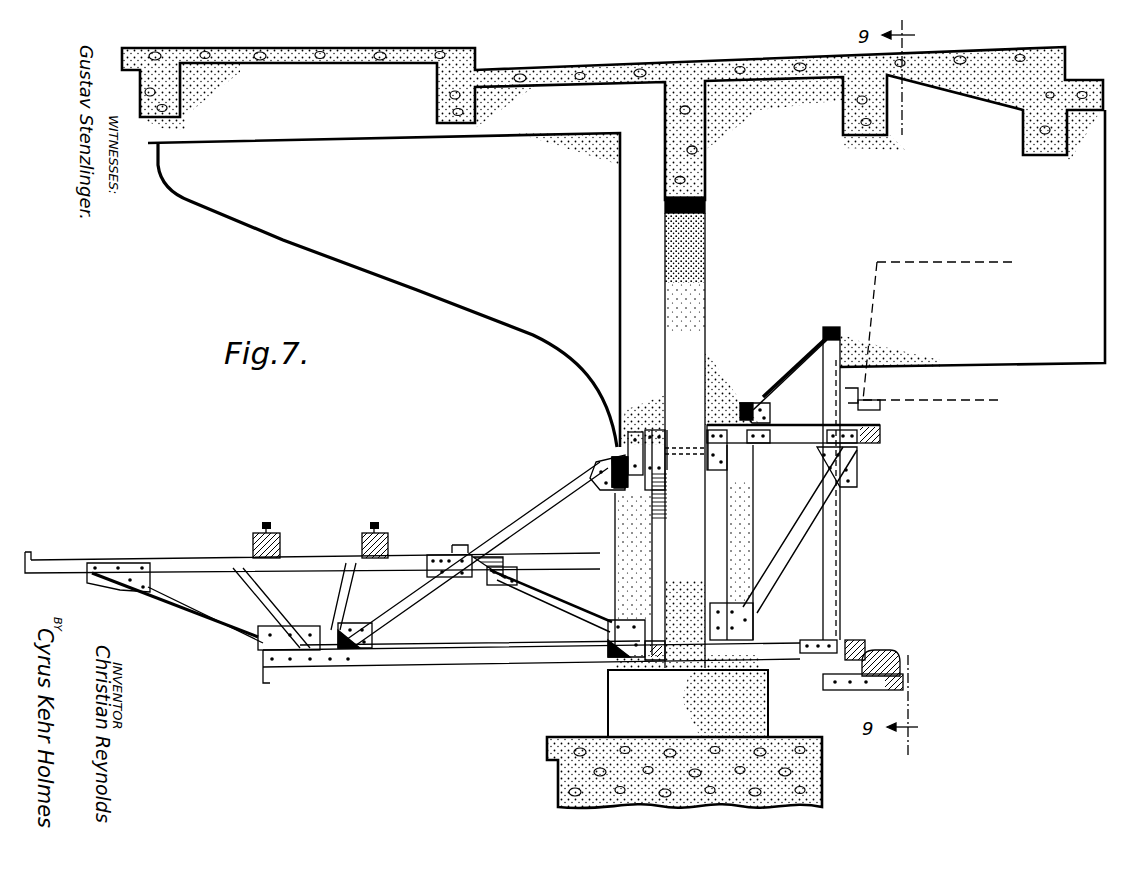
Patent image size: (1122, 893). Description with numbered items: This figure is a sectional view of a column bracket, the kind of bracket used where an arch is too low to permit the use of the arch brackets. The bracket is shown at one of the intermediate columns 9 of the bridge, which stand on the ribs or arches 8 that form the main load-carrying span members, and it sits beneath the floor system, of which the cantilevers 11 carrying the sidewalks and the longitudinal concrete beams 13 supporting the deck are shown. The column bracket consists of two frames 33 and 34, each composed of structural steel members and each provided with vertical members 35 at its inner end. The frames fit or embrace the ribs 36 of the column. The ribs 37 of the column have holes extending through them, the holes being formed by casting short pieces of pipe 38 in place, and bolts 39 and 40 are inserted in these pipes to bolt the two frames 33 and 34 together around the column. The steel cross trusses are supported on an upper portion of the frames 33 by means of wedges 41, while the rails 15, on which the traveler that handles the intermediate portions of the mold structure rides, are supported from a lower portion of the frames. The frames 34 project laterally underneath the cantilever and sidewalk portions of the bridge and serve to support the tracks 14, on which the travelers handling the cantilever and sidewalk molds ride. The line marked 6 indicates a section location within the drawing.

The gate outline 6 is at (957, 386).
The ribs or arches 8 is at (812, 775).
The intermediate columns 9 is at (748, 702).
The cantilevers 11 is at (626, 278).
The longitudinal concrete beams 13 is at (705, 172).
The tracks 14 is at (372, 523).
The rails 15 is at (878, 655).
The frame 33 is at (837, 537).
The frame 34 is at (412, 598).
The vertical members 35 is at (755, 521).
The ribs of the column 36 is at (750, 567).
The ribs of the columns 37 is at (685, 501).
The short pieces of pipe 38 is at (680, 675).
The bolt 39 is at (630, 445).
The bolt 40 is at (652, 668).
The wedges 41 is at (880, 418).